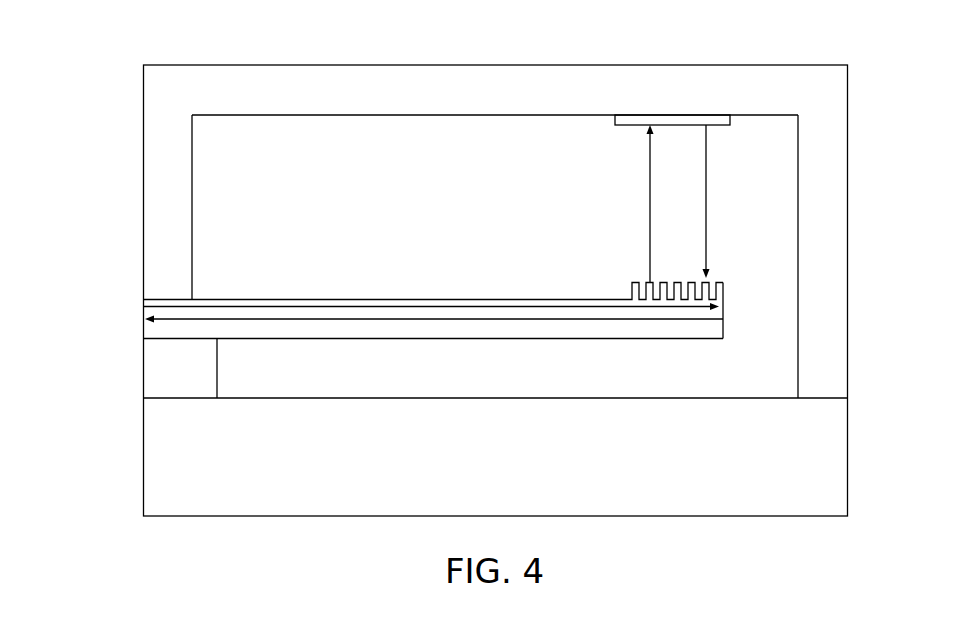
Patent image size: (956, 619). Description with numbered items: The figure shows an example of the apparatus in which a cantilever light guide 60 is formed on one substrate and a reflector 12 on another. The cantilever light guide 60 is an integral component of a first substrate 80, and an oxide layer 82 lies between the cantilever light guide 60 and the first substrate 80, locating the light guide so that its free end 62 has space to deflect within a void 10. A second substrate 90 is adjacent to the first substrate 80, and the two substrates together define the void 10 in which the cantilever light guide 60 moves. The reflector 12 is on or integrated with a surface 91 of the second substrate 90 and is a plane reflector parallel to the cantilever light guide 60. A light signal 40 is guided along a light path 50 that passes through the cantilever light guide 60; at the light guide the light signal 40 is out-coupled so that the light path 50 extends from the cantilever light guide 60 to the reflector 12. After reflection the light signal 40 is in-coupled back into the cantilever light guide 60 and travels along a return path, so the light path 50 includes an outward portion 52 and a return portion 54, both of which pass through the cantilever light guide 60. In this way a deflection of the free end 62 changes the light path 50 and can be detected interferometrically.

The void 10 is at (495, 205).
The reflector 12 is at (672, 121).
The light signal 40 is at (415, 261).
The light path 50 is at (420, 261).
The outward portion 52 is at (649, 213).
The return portion 54 is at (707, 200).
The cantilever light guide 60 is at (597, 338).
The free end 62 is at (723, 316).
The first substrate 80 is at (158, 467).
The oxide layer 82 is at (160, 370).
The second substrate 90 is at (143, 137).
The surface 91 is at (454, 115).